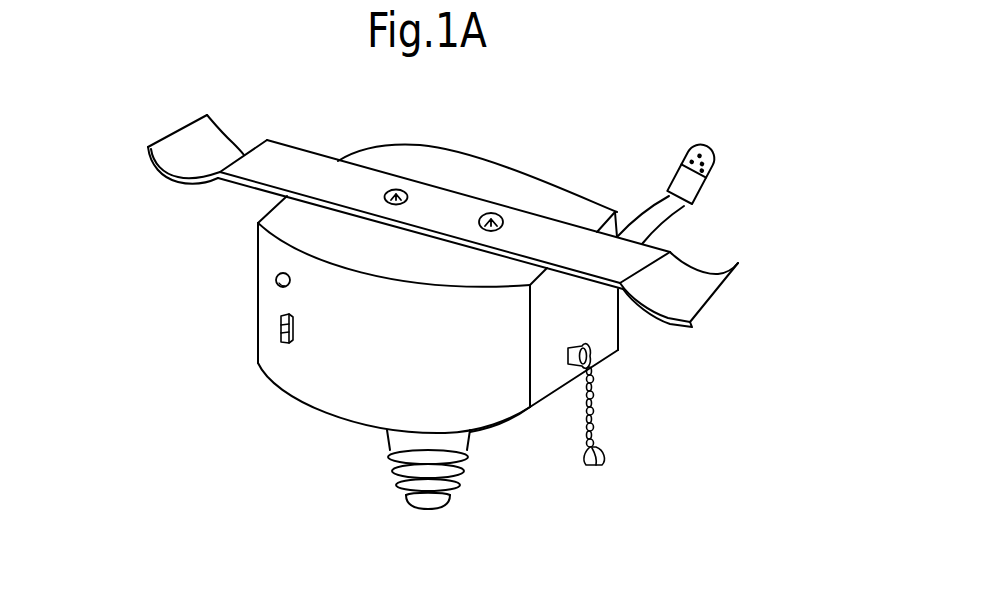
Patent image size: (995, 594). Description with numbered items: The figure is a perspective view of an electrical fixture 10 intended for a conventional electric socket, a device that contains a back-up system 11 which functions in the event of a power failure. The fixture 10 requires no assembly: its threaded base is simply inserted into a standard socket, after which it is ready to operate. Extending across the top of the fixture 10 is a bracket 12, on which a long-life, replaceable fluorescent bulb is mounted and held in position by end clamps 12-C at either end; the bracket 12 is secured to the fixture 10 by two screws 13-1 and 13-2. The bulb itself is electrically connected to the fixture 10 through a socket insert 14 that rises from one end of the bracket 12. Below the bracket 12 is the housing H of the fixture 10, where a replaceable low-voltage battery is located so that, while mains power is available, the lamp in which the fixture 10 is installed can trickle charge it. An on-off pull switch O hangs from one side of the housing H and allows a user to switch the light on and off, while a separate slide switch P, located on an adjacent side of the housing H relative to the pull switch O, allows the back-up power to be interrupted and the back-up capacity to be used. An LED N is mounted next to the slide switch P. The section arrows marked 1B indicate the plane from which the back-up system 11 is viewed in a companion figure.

The fixture 10 is at (294, 110).
The back-up system 11 is at (363, 370).
The bracket 12 is at (395, 477).
The end clamps 12-C is at (180, 188).
The screw 13-1 is at (402, 186).
The screw 13-2 is at (494, 208).
The socket insert 14 is at (693, 186).
The LED N is at (277, 284).
The slide switch P is at (280, 330).
The pull switch O is at (605, 409).
The housing H is at (514, 425).
The section line for FIG. 1B is at (207, 141).